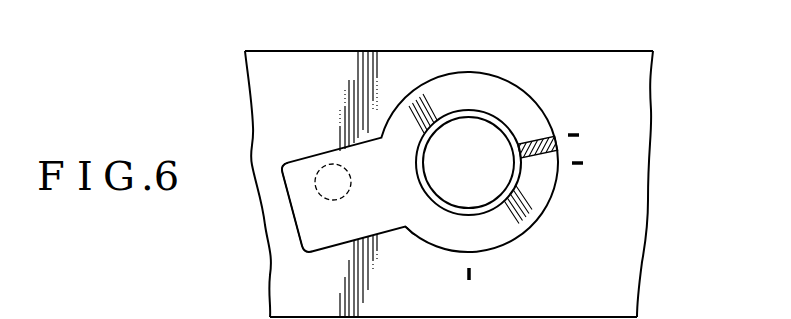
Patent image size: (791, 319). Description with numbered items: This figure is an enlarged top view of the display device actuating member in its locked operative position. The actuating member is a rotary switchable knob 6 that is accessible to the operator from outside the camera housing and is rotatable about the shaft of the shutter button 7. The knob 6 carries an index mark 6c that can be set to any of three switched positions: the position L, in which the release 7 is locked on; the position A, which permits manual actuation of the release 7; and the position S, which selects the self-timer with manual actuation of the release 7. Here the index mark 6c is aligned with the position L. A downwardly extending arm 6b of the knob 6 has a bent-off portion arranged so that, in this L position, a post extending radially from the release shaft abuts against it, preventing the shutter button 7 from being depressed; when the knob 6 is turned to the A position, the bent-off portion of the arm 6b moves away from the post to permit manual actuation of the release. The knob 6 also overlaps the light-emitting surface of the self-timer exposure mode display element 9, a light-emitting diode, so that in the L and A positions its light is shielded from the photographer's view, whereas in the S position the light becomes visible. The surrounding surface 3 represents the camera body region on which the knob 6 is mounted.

The plate / mounting surface 3 is at (632, 99).
The rotary switchable knob 6 is at (434, 156).
The downwardly extending arm 6b is at (319, 243).
The index mark 6c is at (537, 133).
The shutter button 7 is at (507, 175).
The self-timer exposure mode display element 9 is at (331, 174).
The switched position L is at (582, 132).
The switched position A is at (590, 165).
The switched position S is at (469, 291).